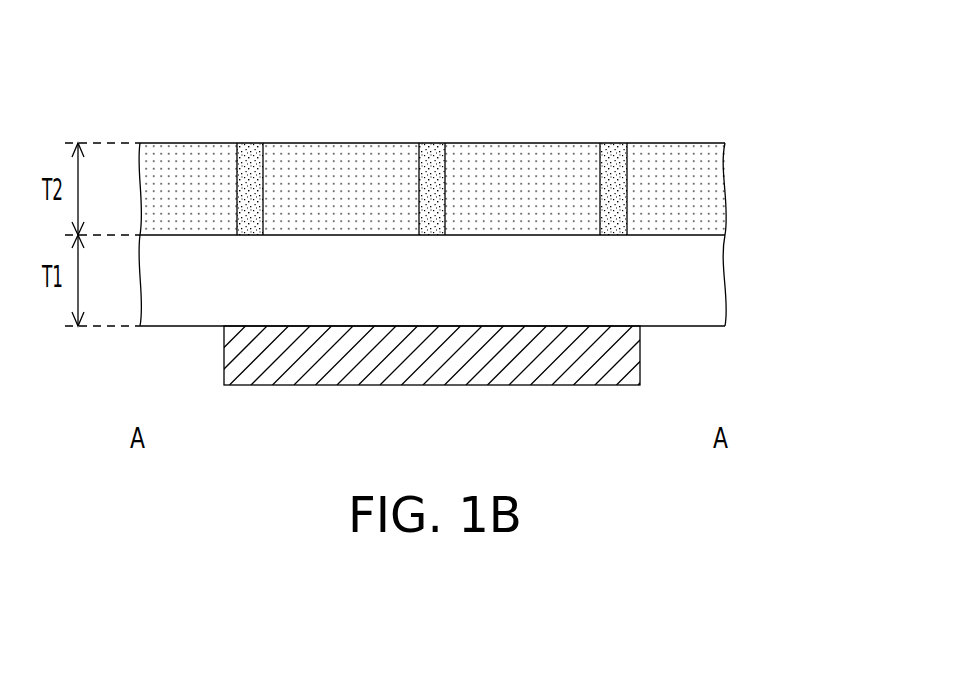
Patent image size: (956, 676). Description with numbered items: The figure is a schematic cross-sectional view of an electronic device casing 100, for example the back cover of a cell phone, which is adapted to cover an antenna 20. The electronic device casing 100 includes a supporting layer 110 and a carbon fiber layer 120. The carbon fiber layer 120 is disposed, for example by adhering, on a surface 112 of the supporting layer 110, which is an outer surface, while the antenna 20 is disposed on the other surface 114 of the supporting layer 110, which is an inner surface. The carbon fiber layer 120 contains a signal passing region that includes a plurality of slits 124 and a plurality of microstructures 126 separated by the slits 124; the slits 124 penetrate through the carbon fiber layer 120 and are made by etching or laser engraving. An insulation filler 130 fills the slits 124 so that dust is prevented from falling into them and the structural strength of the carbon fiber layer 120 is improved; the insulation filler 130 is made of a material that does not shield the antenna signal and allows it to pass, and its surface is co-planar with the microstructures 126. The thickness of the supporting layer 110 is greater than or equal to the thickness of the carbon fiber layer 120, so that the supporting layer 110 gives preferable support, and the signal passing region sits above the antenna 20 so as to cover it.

The electronic device casing 100 is at (483, 224).
The supporting layer 110 is at (470, 254).
The surface 112 is at (192, 235).
The other surface 114 is at (183, 327).
The carbon fiber layer 120 is at (470, 146).
The slits 124 is at (419, 192).
The microstructures 126 is at (507, 168).
The insulation filler 130 is at (250, 143).
The antenna 20 is at (627, 354).